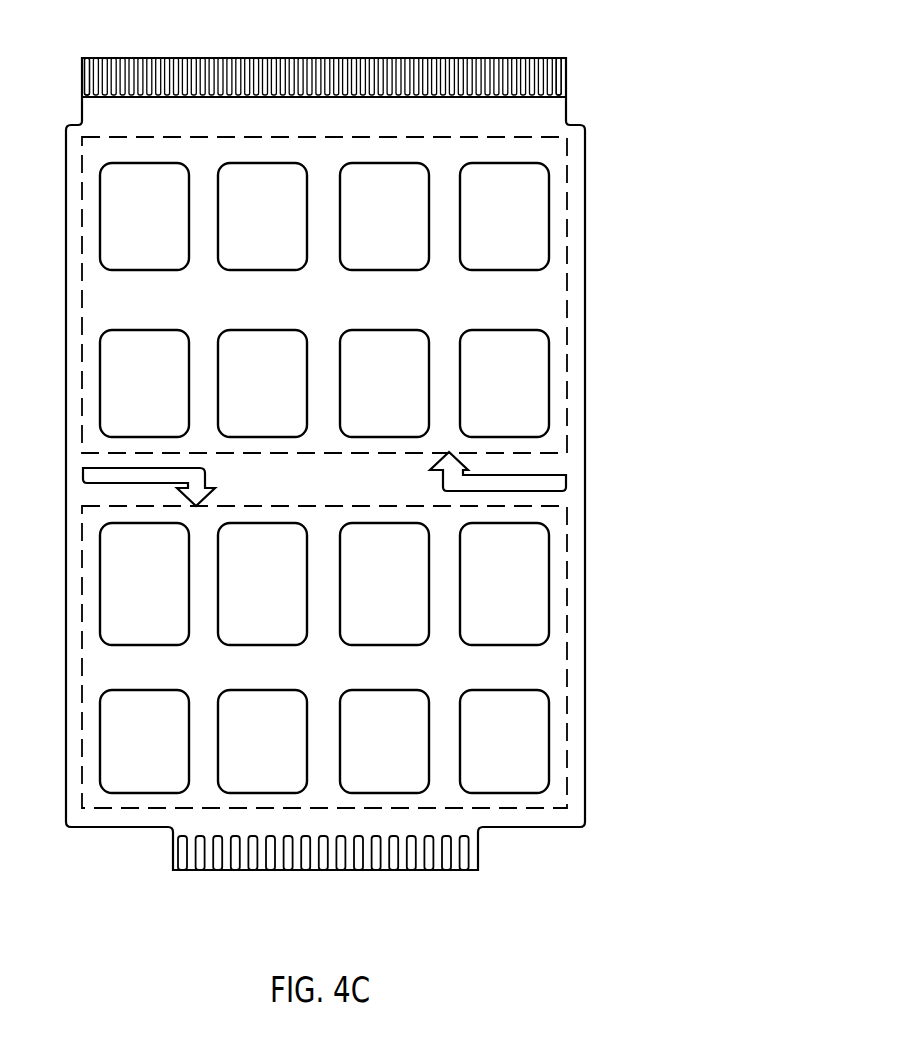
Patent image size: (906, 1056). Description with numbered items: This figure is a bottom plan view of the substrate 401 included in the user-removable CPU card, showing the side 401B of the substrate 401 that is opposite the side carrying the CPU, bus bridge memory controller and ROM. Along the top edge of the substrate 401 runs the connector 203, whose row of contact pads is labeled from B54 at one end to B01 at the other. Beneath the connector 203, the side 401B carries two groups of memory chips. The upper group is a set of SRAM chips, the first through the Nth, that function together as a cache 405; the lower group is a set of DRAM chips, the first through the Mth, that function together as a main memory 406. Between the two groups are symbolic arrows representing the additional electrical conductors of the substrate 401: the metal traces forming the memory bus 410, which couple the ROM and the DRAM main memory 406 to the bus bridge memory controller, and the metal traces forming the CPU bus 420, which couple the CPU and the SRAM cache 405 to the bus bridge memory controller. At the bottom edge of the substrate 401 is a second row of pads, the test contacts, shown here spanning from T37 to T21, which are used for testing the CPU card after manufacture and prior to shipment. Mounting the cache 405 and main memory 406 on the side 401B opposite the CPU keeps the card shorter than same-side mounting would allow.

The substrate 401 is at (117, 302).
The connector 203 is at (197, 57).
The top connector pin B54 is at (91, 57).
The top connector pin B01 is at (557, 57).
The opposite side of substrate 401B is at (345, 119).
The cache 405 is at (344, 315).
The main memory 406 is at (342, 678).
The memory bus 410 is at (197, 480).
The CPU bus 420 is at (448, 480).
The test contact T37 is at (185, 871).
The test contact T21 is at (465, 871).